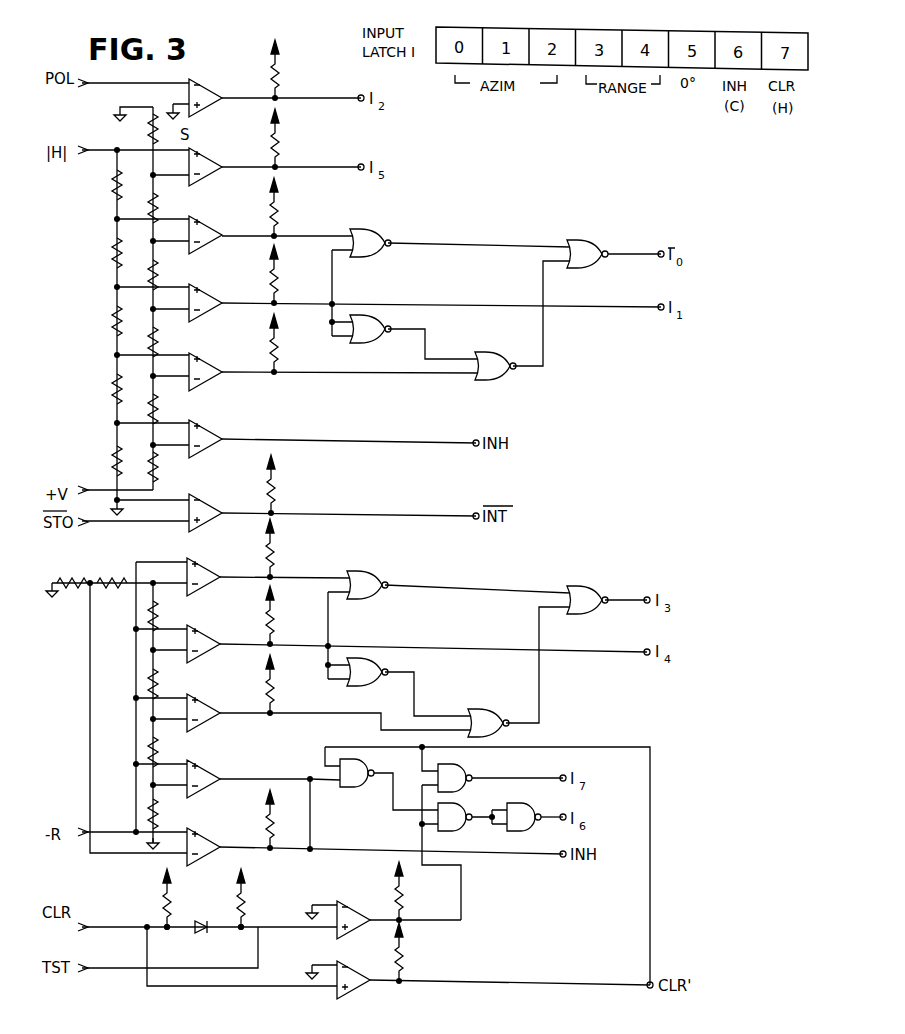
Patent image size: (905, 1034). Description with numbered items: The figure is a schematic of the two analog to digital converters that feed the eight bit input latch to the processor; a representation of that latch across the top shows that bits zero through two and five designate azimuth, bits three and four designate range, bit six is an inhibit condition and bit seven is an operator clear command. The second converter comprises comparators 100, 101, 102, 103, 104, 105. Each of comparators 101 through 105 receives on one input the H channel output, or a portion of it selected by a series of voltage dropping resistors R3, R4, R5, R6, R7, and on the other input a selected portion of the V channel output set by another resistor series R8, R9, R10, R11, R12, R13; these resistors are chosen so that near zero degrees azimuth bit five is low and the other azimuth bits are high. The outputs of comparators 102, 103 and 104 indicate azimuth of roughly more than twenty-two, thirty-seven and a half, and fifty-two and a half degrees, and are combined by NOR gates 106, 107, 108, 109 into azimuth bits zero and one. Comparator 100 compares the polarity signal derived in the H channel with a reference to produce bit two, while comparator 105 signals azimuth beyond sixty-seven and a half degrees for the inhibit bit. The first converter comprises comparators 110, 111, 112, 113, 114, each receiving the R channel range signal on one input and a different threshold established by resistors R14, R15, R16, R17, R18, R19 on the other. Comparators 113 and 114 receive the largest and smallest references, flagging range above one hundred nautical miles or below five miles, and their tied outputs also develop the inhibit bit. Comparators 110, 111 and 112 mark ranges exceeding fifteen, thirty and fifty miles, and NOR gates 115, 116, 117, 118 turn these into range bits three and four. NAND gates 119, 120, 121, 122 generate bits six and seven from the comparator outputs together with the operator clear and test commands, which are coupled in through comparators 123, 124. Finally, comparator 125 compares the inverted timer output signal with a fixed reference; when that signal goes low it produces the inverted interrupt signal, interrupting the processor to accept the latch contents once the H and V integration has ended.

The comparator 100 is at (206, 88).
The comparator 101 is at (203, 180).
The comparator 102 is at (203, 250).
The comparator 103 is at (203, 318).
The comparator 104 is at (205, 386).
The comparator 105 is at (205, 452).
The comparator 125 is at (206, 504).
The NOR gate 106 is at (372, 232).
The NOR gate 107 is at (360, 344).
The NOR gate 108 is at (497, 380).
The NOR gate 109 is at (590, 243).
The comparator 110 is at (205, 567).
The comparator 111 is at (204, 633).
The comparator 112 is at (204, 702).
The comparator 113 is at (204, 768).
The comparator 114 is at (205, 837).
The NOR gate 115 is at (366, 572).
The NOR gate 116 is at (357, 687).
The NOR gate 117 is at (587, 614).
The NOR gate 118 is at (481, 713).
The NAND gate 119 is at (352, 788).
The NAND gate 120 is at (468, 766).
The NAND gate 121 is at (460, 832).
The NAND gate 122 is at (524, 808).
The comparator 123 is at (358, 906).
The comparator 124 is at (355, 972).
The voltage dropping resistor R3 is at (106, 185).
The voltage dropping resistor R4 is at (106, 253).
The voltage dropping resistor R5 is at (106, 321).
The voltage dropping resistor R6 is at (106, 389).
The voltage dropping resistor R7 is at (106, 461).
The voltage dropping resistor R8 is at (163, 467).
The voltage dropping resistor R9 is at (163, 403).
The voltage dropping resistor R10 is at (168, 341).
The voltage dropping resistor R11 is at (168, 275).
The voltage dropping resistor R12 is at (169, 207).
The voltage dropping resistor R13 is at (142, 129).
The voltage dropping resistor R14 is at (169, 814).
The voltage dropping resistor R15 is at (169, 750).
The voltage dropping resistor R16 is at (169, 682).
The voltage dropping resistor R17 is at (169, 614).
The voltage dropping resistor R18 is at (112, 574).
The voltage dropping resistor R19 is at (71, 574).